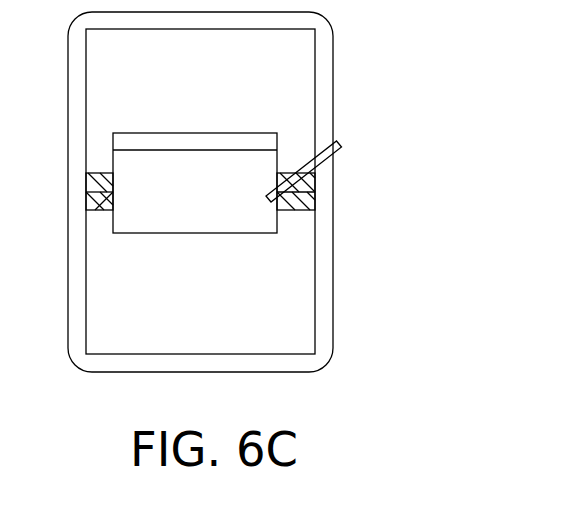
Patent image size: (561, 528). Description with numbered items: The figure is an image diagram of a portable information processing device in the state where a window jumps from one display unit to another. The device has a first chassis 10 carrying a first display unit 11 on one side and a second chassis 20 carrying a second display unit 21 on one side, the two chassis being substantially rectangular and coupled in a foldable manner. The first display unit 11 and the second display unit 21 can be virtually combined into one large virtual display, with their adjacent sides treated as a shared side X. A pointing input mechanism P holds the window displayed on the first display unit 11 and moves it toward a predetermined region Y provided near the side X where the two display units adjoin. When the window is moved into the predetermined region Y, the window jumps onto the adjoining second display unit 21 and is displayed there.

The second chassis 20 is at (247, 192).
The second display unit 21 is at (247, 191).
The first chassis 10 is at (333, 260).
The first display unit 11 is at (315, 310).
The pointing input mechanism P is at (342, 153).
The side X is at (100, 201).
The predetermined region Y is at (343, 173).